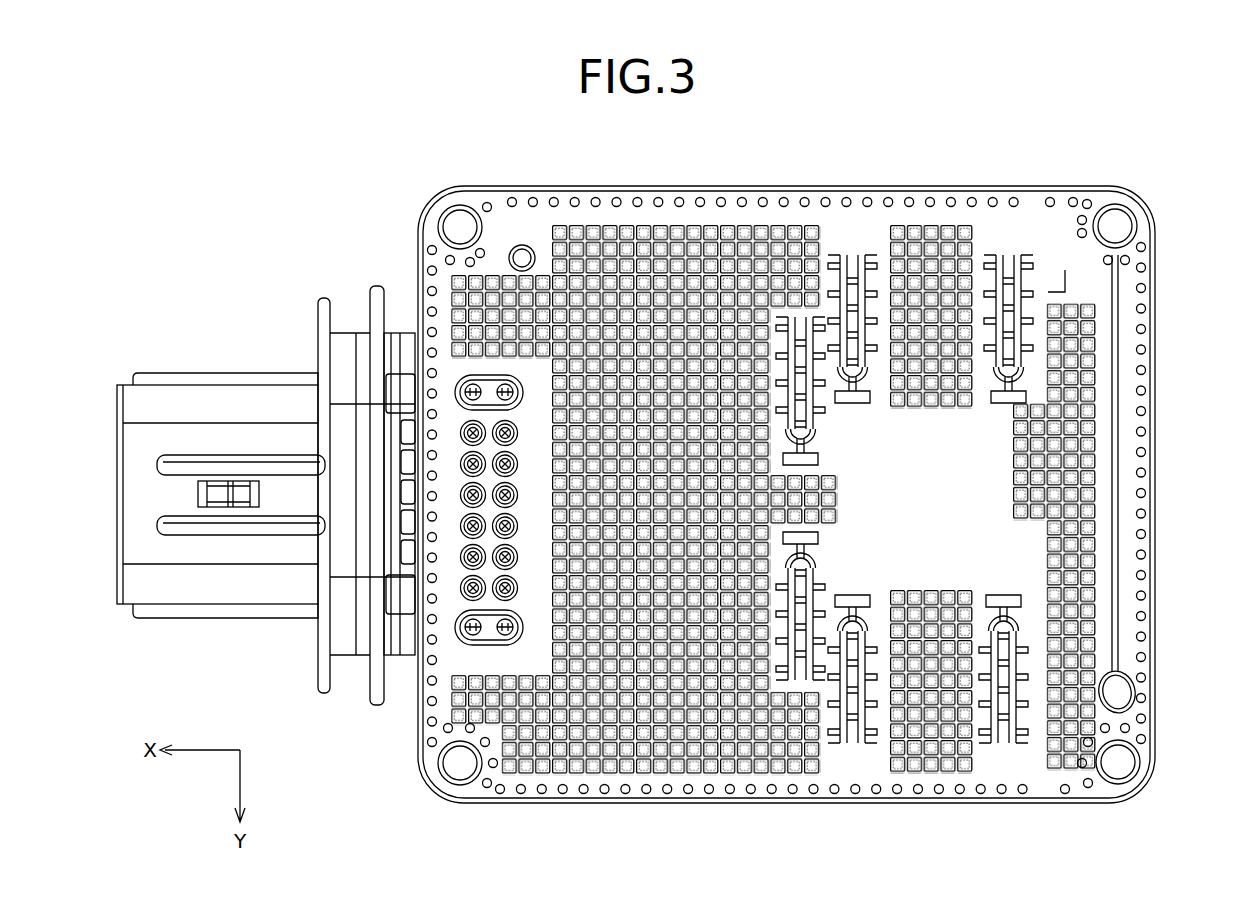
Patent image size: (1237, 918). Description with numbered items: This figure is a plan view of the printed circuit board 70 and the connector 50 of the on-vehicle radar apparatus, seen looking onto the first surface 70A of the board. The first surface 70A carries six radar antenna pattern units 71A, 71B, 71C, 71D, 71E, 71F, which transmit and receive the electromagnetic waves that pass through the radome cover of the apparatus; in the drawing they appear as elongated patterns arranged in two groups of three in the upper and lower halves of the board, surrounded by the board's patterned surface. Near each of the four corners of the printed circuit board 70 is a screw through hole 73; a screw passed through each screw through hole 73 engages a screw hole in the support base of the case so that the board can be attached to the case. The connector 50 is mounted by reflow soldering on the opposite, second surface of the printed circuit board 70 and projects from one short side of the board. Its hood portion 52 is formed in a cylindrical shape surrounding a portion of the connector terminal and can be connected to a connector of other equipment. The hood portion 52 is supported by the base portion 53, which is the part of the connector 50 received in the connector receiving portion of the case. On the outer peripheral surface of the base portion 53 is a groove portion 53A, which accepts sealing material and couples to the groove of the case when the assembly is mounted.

The connector 50 is at (115, 382).
The hood portion 52 is at (220, 410).
The base portion 53 is at (350, 333).
The groove portion 53A is at (376, 628).
The printed circuit board 70 is at (942, 182).
The first surface 70A is at (848, 237).
The radar antenna pattern unit 71A is at (810, 317).
The radar antenna pattern unit 71B is at (867, 253).
The radar antenna pattern unit 71C is at (1023, 253).
The radar antenna pattern unit 71D is at (815, 680).
The radar antenna pattern unit 71E is at (873, 743).
The radar antenna pattern unit 71F is at (1027, 743).
The screw through hole 73 is at (452, 223).